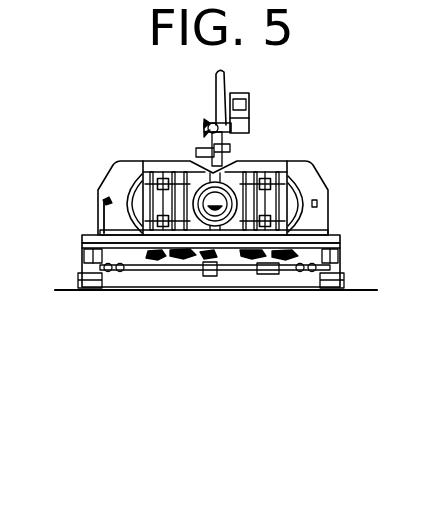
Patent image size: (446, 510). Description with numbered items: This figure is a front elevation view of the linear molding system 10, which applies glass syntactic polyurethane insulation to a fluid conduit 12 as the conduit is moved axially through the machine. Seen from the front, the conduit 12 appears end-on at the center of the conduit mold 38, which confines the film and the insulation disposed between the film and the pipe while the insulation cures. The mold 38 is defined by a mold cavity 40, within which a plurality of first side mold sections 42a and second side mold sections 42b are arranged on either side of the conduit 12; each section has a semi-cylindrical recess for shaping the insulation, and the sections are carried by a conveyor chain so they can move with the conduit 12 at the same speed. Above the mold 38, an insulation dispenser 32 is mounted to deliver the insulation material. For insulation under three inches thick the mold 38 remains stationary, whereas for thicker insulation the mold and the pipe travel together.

The linear molding system 10 is at (352, 90).
The fluid conduit 12 is at (0, 163).
The insulation dispenser 32 is at (249, 104).
The conduit mold 38 is at (281, 158).
The mold cavity 40 is at (103, 189).
The first side mold sections 42a is at (296, 186).
The second side mold sections 42b is at (127, 173).